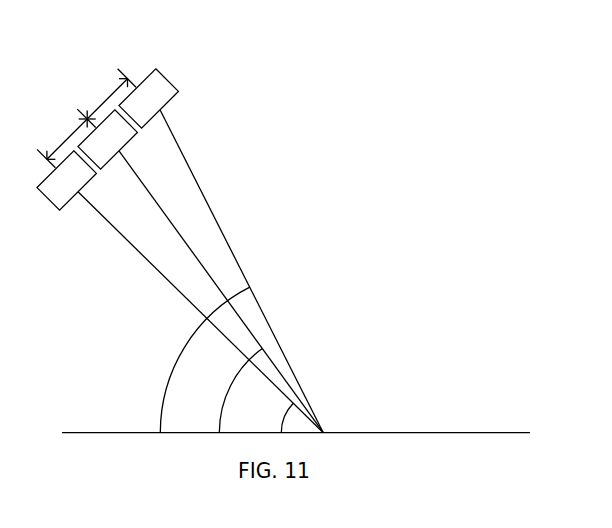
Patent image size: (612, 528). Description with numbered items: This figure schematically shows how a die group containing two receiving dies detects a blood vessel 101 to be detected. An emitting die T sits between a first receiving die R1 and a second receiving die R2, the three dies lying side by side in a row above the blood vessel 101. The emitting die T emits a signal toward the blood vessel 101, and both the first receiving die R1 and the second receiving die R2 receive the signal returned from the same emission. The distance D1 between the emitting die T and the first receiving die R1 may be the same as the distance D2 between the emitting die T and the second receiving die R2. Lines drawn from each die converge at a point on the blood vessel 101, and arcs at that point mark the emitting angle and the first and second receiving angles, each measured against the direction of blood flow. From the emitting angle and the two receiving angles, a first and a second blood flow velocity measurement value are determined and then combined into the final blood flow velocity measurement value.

The blood vessel to be detected 101 is at (482, 432).
The first receiving die R1 is at (165, 98).
The second receiving die R2 is at (66, 199).
The emitting die T is at (107, 151).
The distance between the emitting die and the first receiving die D1 is at (106, 95).
The distance between the emitting die and the second receiving die D2 is at (62, 137).